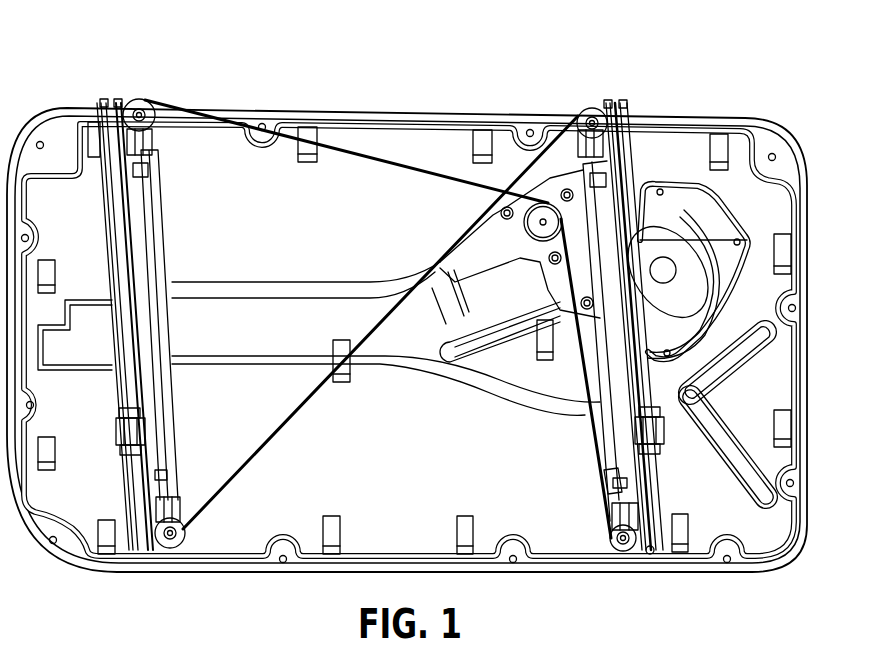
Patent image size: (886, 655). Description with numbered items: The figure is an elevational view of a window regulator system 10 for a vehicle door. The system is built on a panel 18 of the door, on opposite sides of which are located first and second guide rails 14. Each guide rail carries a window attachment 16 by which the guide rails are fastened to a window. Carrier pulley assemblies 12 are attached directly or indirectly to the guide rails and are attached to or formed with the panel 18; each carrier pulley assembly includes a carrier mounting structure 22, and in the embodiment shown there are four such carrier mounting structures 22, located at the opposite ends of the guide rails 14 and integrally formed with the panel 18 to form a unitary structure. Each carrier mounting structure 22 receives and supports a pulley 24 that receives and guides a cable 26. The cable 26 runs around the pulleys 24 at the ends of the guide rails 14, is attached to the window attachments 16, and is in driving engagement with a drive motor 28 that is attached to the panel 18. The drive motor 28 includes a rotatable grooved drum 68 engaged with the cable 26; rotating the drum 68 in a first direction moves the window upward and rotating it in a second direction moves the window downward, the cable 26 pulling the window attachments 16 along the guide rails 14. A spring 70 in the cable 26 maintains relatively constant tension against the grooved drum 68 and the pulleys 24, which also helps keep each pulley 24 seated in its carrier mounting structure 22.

The window regulator system 10 is at (765, 85).
The carrier pulley assembly 12 is at (640, 105).
The guide rail 14 is at (143, 220).
The window attachment 16 is at (130, 430).
The panel 18 is at (381, 472).
The carrier mounting structure 22 is at (160, 124).
The pulley 24 is at (134, 98).
The cable 26 is at (346, 130).
The drive motor 28 is at (532, 224).
The rotatable grooved drum 68 is at (538, 228).
The spring 70 is at (612, 475).